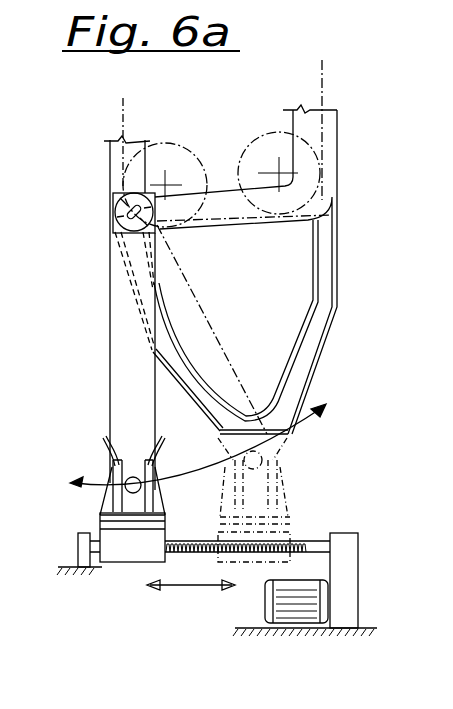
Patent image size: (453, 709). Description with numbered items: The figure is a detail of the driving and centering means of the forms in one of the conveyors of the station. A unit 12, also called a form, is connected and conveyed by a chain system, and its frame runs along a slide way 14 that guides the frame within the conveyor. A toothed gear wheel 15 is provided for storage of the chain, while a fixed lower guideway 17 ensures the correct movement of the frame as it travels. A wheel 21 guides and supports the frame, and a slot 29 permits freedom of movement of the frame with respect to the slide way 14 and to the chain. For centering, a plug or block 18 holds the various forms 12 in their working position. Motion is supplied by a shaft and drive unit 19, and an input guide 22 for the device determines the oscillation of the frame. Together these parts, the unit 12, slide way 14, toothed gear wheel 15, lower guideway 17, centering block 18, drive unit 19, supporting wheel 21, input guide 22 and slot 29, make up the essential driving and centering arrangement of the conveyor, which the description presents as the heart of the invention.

The unit 12 is at (105, 379).
The slide way 14 is at (148, 142).
The toothed gear wheel 15 is at (202, 160).
The fixed lower guideway 17 is at (203, 377).
The plug or block 18 is at (128, 553).
The shaft and drive unit 19 is at (347, 597).
The wheel 21 is at (133, 477).
The input guide 22 is at (102, 447).
The slot 29 is at (115, 213).